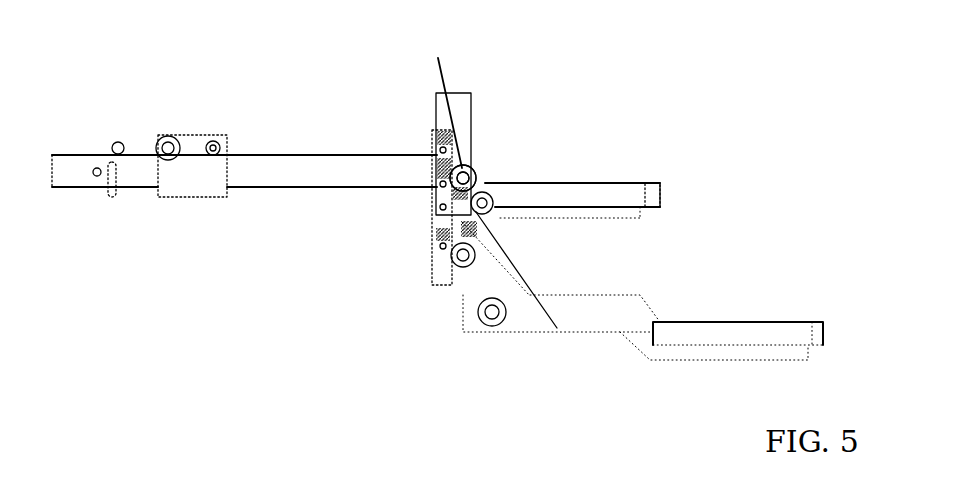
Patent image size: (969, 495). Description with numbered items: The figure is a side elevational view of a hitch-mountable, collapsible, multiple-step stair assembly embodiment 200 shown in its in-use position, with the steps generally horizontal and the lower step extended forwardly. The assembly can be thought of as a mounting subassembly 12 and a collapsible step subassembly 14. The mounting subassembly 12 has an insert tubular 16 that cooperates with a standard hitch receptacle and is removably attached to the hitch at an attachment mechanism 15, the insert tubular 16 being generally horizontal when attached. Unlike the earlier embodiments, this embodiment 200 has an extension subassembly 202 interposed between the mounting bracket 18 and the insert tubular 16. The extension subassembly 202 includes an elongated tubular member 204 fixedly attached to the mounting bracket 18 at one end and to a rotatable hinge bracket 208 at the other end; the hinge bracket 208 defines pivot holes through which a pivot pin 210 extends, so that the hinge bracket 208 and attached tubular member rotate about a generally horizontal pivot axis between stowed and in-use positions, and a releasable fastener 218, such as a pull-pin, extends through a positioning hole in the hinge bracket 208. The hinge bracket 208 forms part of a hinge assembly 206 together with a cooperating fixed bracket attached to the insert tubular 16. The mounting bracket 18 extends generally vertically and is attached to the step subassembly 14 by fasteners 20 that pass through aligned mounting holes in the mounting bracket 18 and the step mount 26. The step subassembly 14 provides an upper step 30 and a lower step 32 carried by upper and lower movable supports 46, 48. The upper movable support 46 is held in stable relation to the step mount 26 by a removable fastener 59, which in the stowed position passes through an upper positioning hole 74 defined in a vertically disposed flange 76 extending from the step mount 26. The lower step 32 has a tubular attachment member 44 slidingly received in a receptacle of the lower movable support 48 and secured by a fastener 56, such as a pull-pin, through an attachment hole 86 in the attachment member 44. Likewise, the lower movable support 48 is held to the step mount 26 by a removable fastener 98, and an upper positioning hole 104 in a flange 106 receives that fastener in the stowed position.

The mounting subassembly 12 is at (407, 96).
The collapsible step subassembly 14 is at (714, 222).
The attachment mechanism 15 is at (134, 203).
The insert tubular 16 is at (75, 155).
The mounting bracket 18 is at (452, 187).
The fasteners 20 is at (433, 137).
The step mount 26 is at (455, 230).
The upper step 30 is at (667, 190).
The lower step 32 is at (843, 312).
The lower step attachment member 44 is at (592, 328).
The upper movable support 46 is at (496, 168).
The lower movable support 48 is at (527, 290).
The fastener 56 is at (487, 323).
The removable or releasable fastener 59 is at (455, 177).
The upper positioning hole 74 is at (489, 151).
The vertically disposed flange 76 is at (480, 152).
The attachment hole 86 is at (568, 312).
The removable or releasable fastener 98 is at (468, 264).
The upper positioning hole 104 is at (492, 238).
The flange 106 is at (497, 222).
The embodiment 200 is at (563, 74).
The extension subassembly 202 is at (259, 89).
The elongated tubular member 204 is at (300, 192).
The hinge assembly 206 is at (210, 207).
The hinge bracket 208 is at (196, 197).
The pivot pin 210 is at (213, 141).
The releasable or removable fastener 218 is at (167, 137).